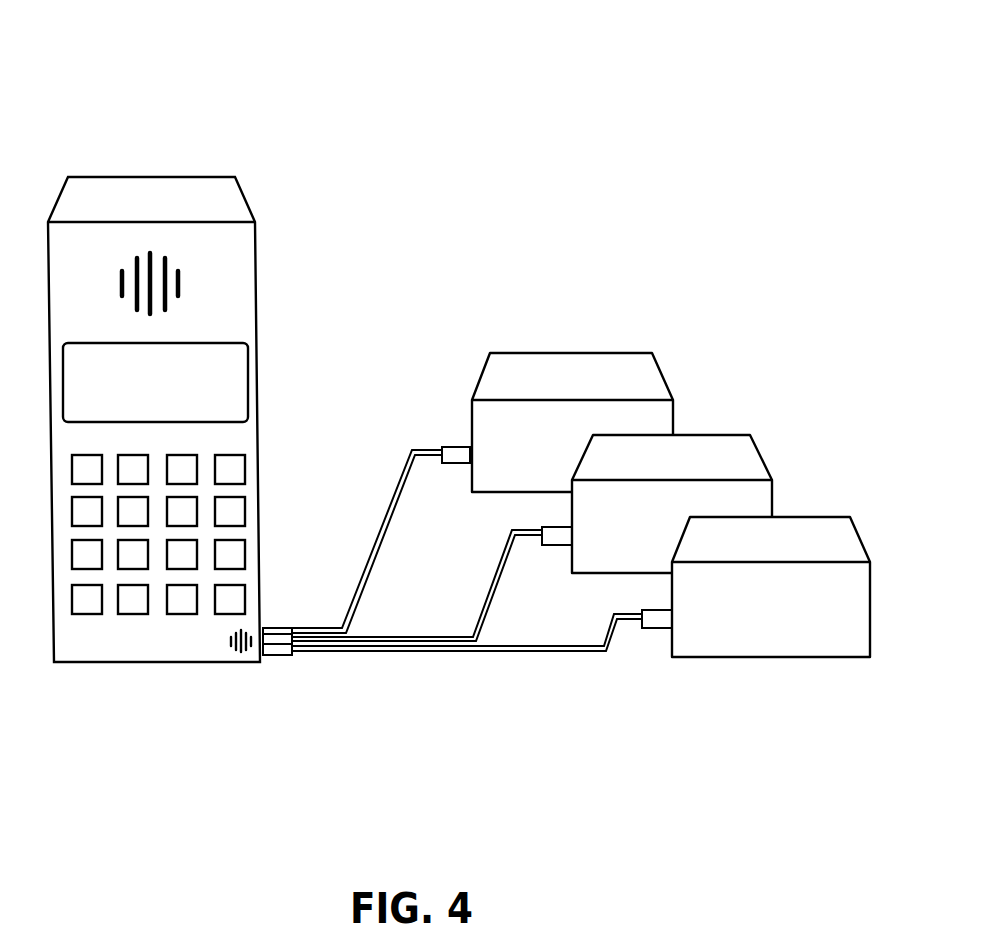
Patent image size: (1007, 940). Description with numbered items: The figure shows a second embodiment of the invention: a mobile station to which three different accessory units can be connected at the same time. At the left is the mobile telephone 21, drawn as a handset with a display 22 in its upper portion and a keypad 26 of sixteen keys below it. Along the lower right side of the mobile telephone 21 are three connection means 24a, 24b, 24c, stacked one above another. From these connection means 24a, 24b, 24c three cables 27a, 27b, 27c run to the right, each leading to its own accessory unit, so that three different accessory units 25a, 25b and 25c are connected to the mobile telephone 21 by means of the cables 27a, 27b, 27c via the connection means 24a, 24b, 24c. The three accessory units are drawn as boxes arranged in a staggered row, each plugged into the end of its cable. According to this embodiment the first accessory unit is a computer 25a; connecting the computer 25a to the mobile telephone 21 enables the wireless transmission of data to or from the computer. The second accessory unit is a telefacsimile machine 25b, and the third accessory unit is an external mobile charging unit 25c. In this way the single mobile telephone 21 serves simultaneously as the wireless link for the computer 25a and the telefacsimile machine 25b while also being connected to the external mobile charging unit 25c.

The mobile telephone 21 is at (205, 339).
The display 22 is at (235, 385).
The keypad 26 is at (227, 509).
The connection means 24a is at (274, 656).
The connection means 24b is at (290, 630).
The connection means 24c is at (267, 628).
The computer 25a is at (727, 535).
The telefacsimile machine 25b is at (627, 458).
The external mobile charging unit 25c is at (527, 372).
The cable 27a is at (613, 631).
The cable 27b is at (478, 631).
The cable 27c is at (350, 631).